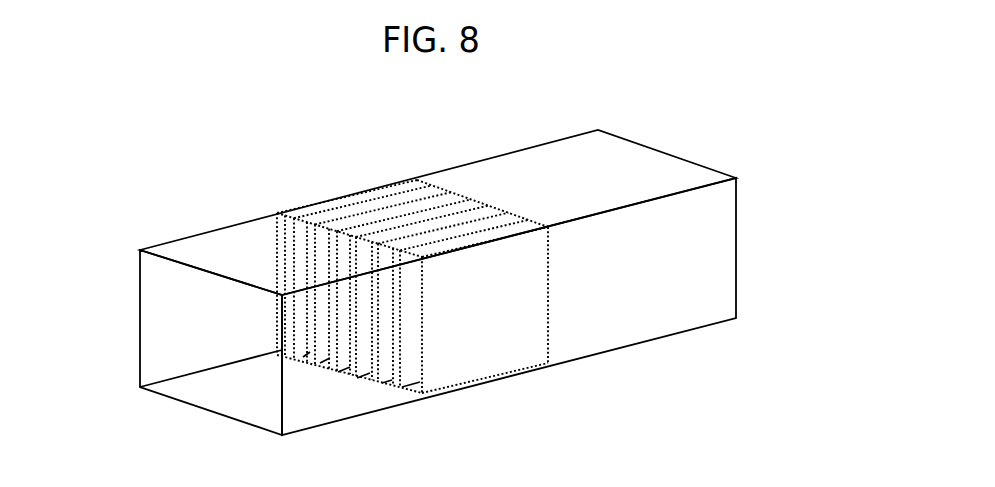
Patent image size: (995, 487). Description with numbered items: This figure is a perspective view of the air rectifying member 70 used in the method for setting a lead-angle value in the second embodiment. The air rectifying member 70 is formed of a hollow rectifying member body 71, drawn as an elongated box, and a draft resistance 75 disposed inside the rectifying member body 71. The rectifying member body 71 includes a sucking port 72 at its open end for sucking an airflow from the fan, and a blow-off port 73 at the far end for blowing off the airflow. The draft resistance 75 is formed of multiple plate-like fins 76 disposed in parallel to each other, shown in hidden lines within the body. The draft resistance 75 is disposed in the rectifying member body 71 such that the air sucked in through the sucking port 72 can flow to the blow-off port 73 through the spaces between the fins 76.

The air rectifying member 70 is at (444, 260).
The rectifying member body 71 is at (456, 167).
The sucking port 72 is at (168, 314).
The blow-off port 73 is at (737, 257).
The draft resistance 75 is at (508, 354).
The plate-like fins 76 is at (401, 355).